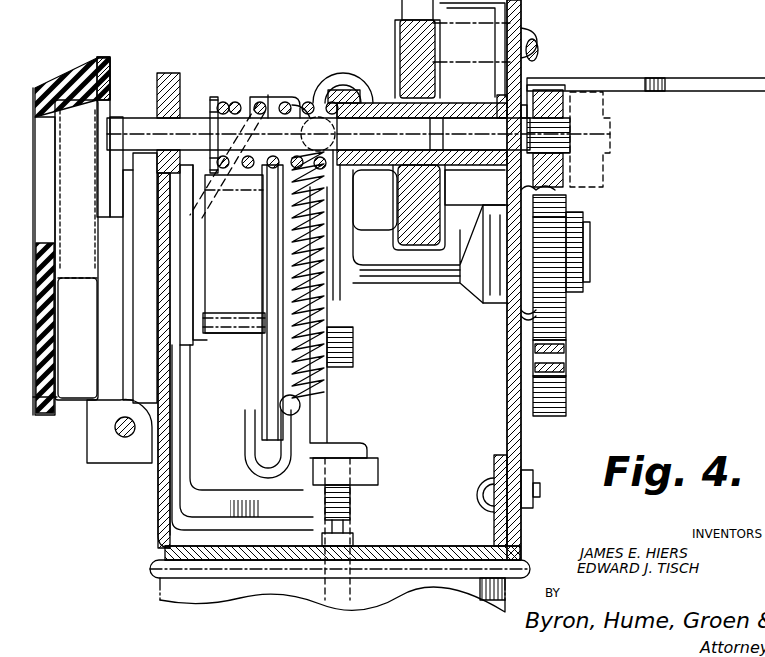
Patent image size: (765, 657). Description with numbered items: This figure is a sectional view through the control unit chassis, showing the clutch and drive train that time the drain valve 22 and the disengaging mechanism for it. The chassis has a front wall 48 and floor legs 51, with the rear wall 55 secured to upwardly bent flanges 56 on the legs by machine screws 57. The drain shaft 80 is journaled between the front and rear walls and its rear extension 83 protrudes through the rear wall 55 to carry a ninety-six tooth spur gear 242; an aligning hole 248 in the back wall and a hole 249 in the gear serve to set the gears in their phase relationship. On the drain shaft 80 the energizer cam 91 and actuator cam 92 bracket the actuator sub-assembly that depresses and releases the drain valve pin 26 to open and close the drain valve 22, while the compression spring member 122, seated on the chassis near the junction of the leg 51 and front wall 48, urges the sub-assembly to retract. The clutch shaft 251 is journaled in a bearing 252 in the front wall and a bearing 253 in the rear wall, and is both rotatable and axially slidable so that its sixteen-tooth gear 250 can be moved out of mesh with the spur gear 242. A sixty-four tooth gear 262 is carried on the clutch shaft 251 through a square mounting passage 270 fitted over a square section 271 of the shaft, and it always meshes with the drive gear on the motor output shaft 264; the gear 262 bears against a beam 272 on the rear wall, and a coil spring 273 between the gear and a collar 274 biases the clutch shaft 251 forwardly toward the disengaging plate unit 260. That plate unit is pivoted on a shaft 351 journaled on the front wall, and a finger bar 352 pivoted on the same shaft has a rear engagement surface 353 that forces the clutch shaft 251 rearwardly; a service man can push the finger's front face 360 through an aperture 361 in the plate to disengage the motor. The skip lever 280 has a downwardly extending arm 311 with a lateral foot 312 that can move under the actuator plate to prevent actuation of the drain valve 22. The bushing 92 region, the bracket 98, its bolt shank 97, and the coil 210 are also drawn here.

The drain valve 22 is at (168, 606).
The drain valve pin 26 is at (355, 546).
The front wall 48 is at (160, 496).
The legs 51 is at (428, 546).
The rear wall 55 is at (521, 446).
The upwardly bent flanges 56 is at (496, 464).
The machine screws 57 is at (491, 506).
The drain shaft 80 is at (447, 272).
The rear extension 83 is at (582, 270).
The energizer cam 91 is at (260, 387).
The actuator cam 92 is at (346, 347).
The bolt shank 97 is at (348, 493).
The angle bracket 98 is at (353, 446).
The compression spring member 122 is at (193, 360).
The coil spring 210 is at (316, 360).
The spur gear 242 is at (562, 392).
The aligning hole 248 is at (516, 358).
The aligning hole 249 is at (556, 366).
The sixteen-tooth gear 250 is at (556, 88).
The clutch shaft 251 is at (118, 138).
The bearing 252 is at (173, 105).
The bearing 253 is at (562, 192).
The disengaging plate unit 260 is at (48, 420).
The sixty-four tooth gear 262 is at (432, 246).
The output shaft 264 is at (510, 29).
The square mounting passage 270 is at (360, 158).
The square section 271 is at (363, 122).
The beam 272 is at (500, 98).
The coil spring 273 is at (228, 100).
The collar 274 is at (224, 193).
The skip lever 280 is at (194, 420).
The arm 311 is at (182, 468).
The foot 312 is at (205, 506).
The shaft 351 is at (125, 437).
The finger bar 352 is at (78, 104).
The rear engagement surface 353 is at (108, 113).
The front face 360 is at (37, 118).
The aperture 361 is at (55, 195).